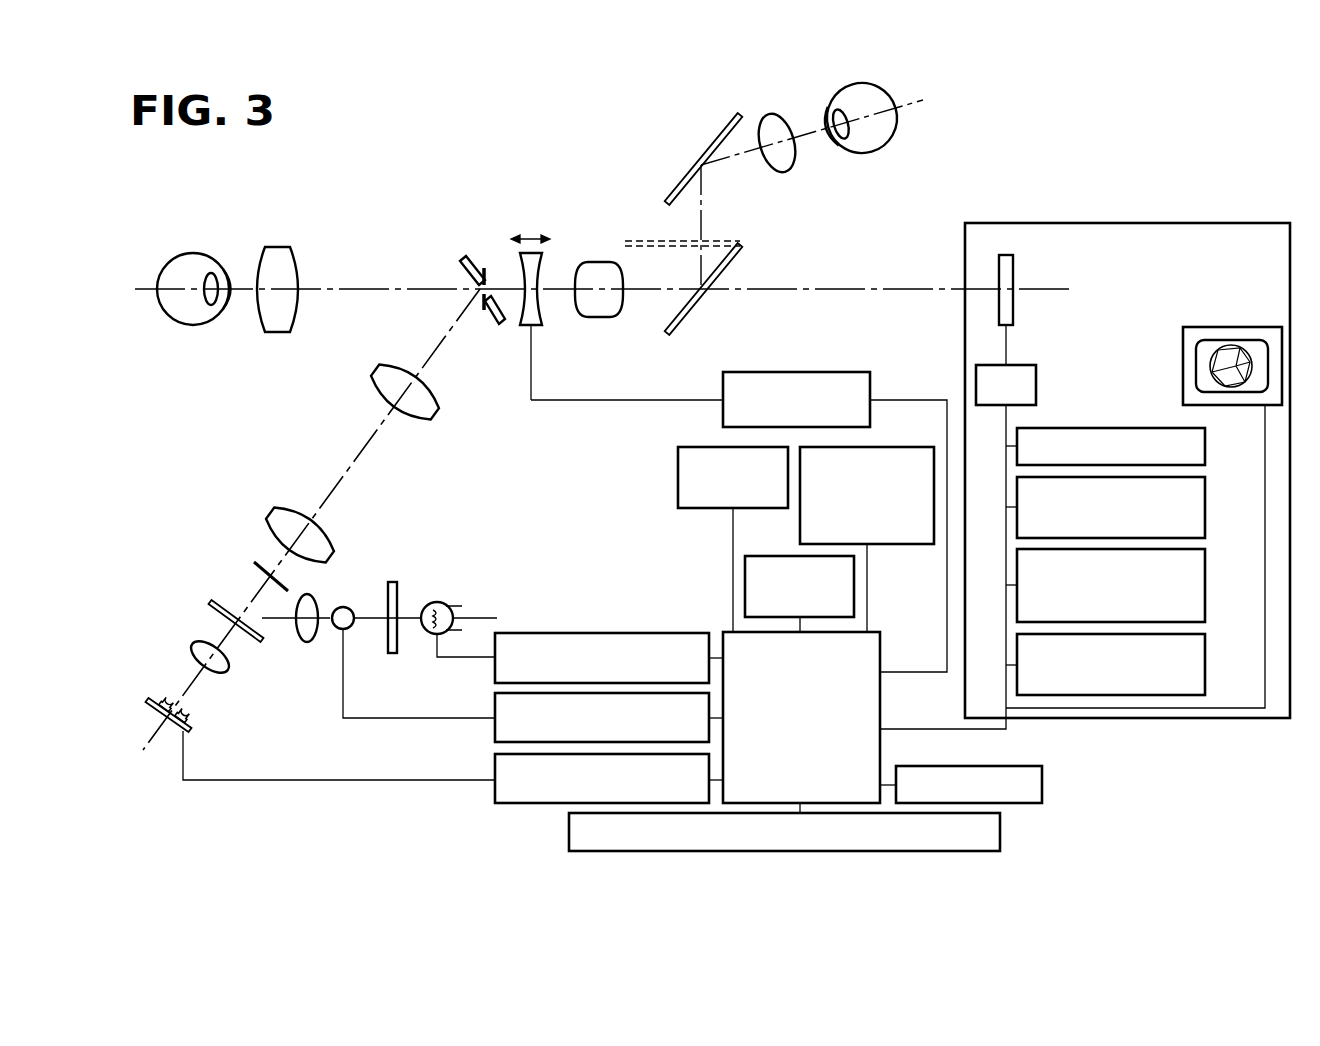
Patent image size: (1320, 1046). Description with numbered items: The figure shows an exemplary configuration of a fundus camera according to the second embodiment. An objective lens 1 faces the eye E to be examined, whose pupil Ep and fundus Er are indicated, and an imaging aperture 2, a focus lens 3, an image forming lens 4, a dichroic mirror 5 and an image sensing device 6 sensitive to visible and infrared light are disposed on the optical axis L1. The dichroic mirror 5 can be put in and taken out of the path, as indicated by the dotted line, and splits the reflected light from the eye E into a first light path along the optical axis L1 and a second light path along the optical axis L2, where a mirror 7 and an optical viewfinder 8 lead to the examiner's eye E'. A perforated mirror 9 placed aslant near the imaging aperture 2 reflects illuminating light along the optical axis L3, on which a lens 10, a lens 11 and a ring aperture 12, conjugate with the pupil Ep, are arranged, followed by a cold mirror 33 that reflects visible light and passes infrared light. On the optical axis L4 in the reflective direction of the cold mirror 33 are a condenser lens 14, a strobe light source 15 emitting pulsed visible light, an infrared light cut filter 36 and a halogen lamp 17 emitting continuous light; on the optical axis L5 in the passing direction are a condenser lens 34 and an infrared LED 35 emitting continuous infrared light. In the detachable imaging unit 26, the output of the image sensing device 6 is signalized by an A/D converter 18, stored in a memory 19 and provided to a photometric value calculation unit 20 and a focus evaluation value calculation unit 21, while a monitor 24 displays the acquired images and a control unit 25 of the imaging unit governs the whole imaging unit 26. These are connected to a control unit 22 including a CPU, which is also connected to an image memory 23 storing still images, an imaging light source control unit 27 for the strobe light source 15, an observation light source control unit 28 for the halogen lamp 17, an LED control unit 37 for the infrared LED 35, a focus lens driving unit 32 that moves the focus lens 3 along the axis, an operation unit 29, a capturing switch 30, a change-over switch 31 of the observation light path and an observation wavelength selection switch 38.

The objective lens 1 is at (279, 247).
The imaging aperture 2 is at (483, 312).
The focus lens 3 is at (538, 326).
The image forming lens 4 is at (598, 318).
The dichroic mirror 5 is at (690, 312).
The image sensing device 6 is at (1014, 262).
The mirror 7 is at (717, 138).
The optical viewfinder 8 is at (797, 163).
The perforated mirror 9 is at (469, 258).
The lens 10 is at (396, 362).
The lens 11 is at (286, 505).
The ring aperture 12 is at (258, 567).
The condenser lens 14 is at (308, 642).
The strobe light source 15 is at (346, 607).
The halogen lamp 17 is at (446, 604).
The A/D converter 18 is at (988, 365).
The memory 19 is at (1206, 444).
The photometric value calculation unit 20 is at (1206, 495).
The focus evaluation value calculation unit 21 is at (1206, 566).
The control unit 22 is at (880, 690).
The image memory 23 is at (1042, 777).
The monitor 24 is at (1254, 327).
The control unit of the imaging unit 25 is at (1206, 653).
The imaging unit 26 is at (1264, 223).
The imaging light source control unit 27 is at (495, 733).
The observation light source control unit 28 is at (645, 633).
The operation unit 29 is at (678, 465).
The capturing switch 30 is at (762, 556).
The change-over switch of the observation light path 31 is at (913, 544).
The focus lens driving unit 32 is at (846, 372).
The cold mirror 33 is at (218, 603).
The condenser lens 34 is at (224, 673).
The infrared LED 35 is at (166, 688).
The infrared light cut filter 36 is at (392, 654).
The LED control unit 37 is at (495, 795).
The observation wavelength selection switch 38 is at (1000, 832).
The eye to be examined E is at (193, 264).
The pupil Ep is at (224, 282).
The fundus Er is at (170, 322).
The examiner's eye E' is at (879, 118).
The optical axis L1 is at (390, 288).
The optical axis L2 is at (707, 212).
The optical axis L3 is at (370, 437).
The optical axis L4 is at (278, 624).
The optical axis L5 is at (206, 634).